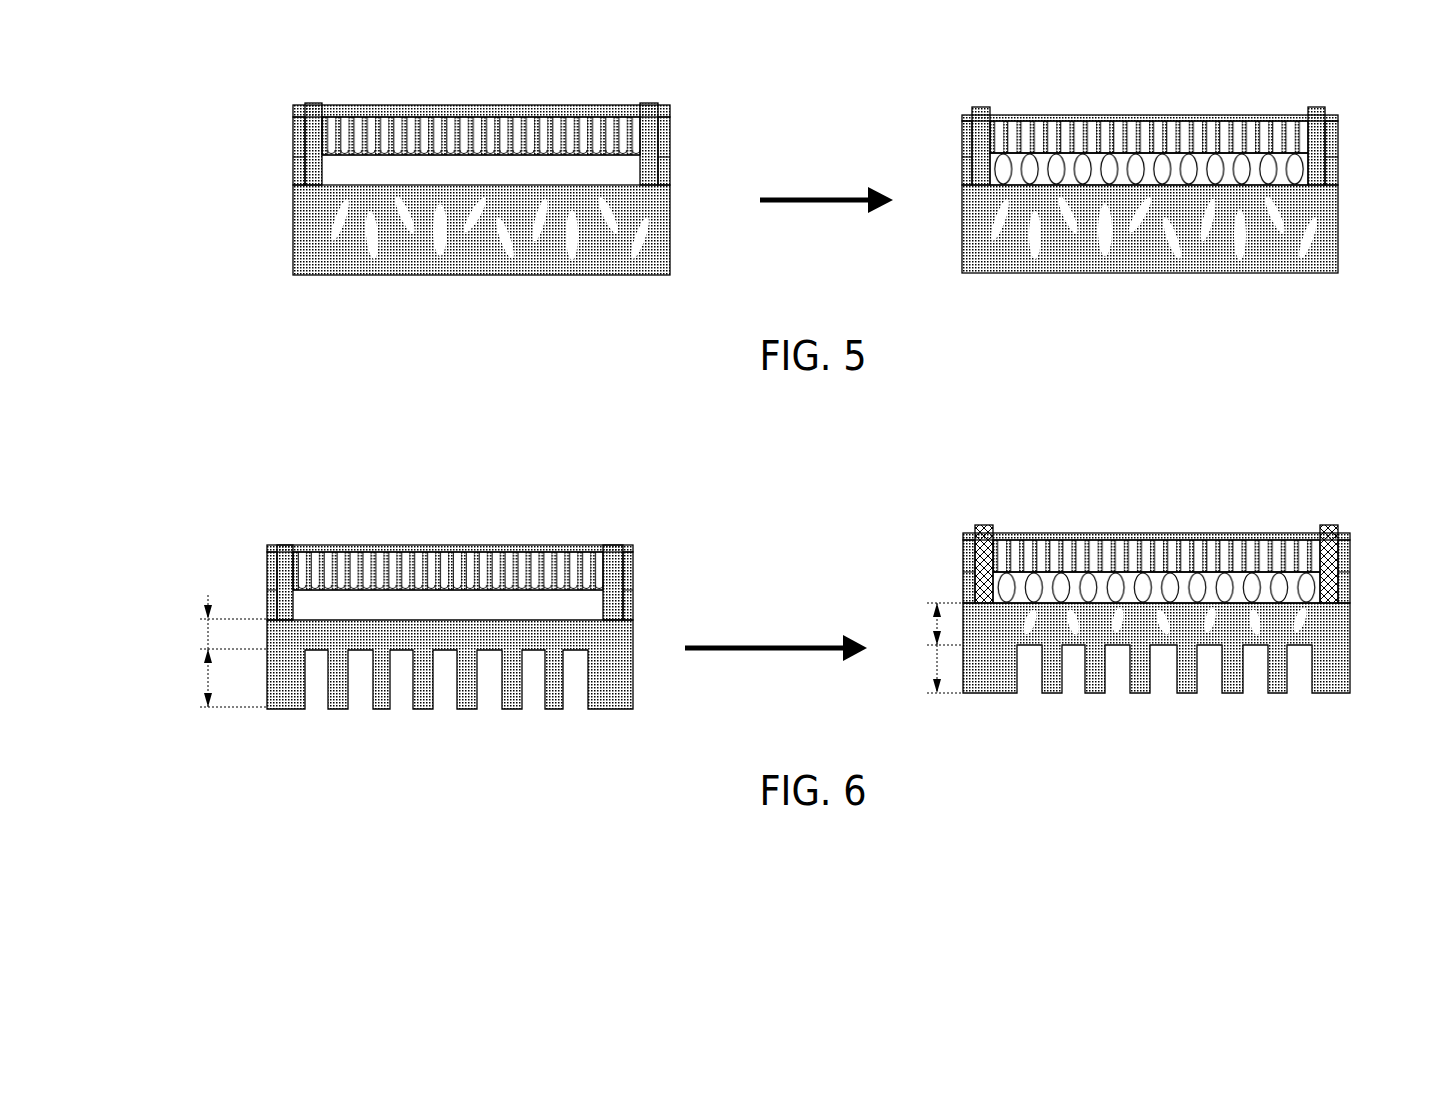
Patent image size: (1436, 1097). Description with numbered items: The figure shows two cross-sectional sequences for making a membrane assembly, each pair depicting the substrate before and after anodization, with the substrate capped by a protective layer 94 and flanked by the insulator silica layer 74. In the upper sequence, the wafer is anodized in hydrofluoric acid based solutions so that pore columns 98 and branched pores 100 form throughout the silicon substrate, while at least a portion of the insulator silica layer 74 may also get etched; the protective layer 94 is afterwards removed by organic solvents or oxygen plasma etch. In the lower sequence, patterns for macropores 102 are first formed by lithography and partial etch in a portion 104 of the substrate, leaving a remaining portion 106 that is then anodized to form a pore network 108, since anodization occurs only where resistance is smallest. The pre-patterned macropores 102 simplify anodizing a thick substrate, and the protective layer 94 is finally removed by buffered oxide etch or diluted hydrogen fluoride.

In FIG. 5, the insulator silica layer 74 is at (327, 168).
In FIG. 6, the insulator silica layer 74 is at (300, 607).
In FIG. 5, the protective layer 94 is at (448, 104).
In FIG. 6, the protective layer 94 is at (390, 545).
In FIG. 5, the pore columns 98 is at (452, 263).
In FIG. 5, the branched pores 100 is at (821, 264).
In FIG. 6, the macropores 102 is at (851, 691).
In FIG. 6, the portion of the substrate 104 is at (207, 683).
In FIG. 6, the remaining portion of the silicon substrate 106 is at (207, 635).
In FIG. 6, the pore network 108 is at (1318, 621).